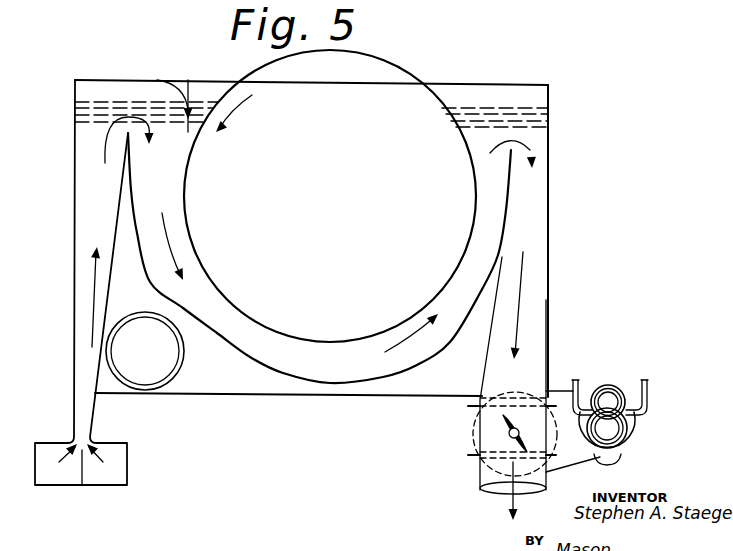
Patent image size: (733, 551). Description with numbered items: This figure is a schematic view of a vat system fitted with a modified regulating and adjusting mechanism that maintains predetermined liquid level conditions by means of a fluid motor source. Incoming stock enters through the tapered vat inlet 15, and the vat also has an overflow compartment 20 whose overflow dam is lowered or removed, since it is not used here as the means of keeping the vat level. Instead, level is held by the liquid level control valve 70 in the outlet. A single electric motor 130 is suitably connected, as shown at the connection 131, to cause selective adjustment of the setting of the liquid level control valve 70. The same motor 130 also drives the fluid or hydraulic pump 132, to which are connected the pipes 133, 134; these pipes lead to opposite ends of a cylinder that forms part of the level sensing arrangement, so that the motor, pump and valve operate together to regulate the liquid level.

The tapered vat inlet 15 is at (90, 200).
The overflow compartment 20 is at (540, 272).
The liquid level control valve 70 is at (503, 414).
The electric motor 130 is at (636, 431).
The connection 131 is at (620, 463).
The hydraulic pump 132 is at (627, 367).
The pipe 133 is at (587, 353).
The pipe 134 is at (648, 384).